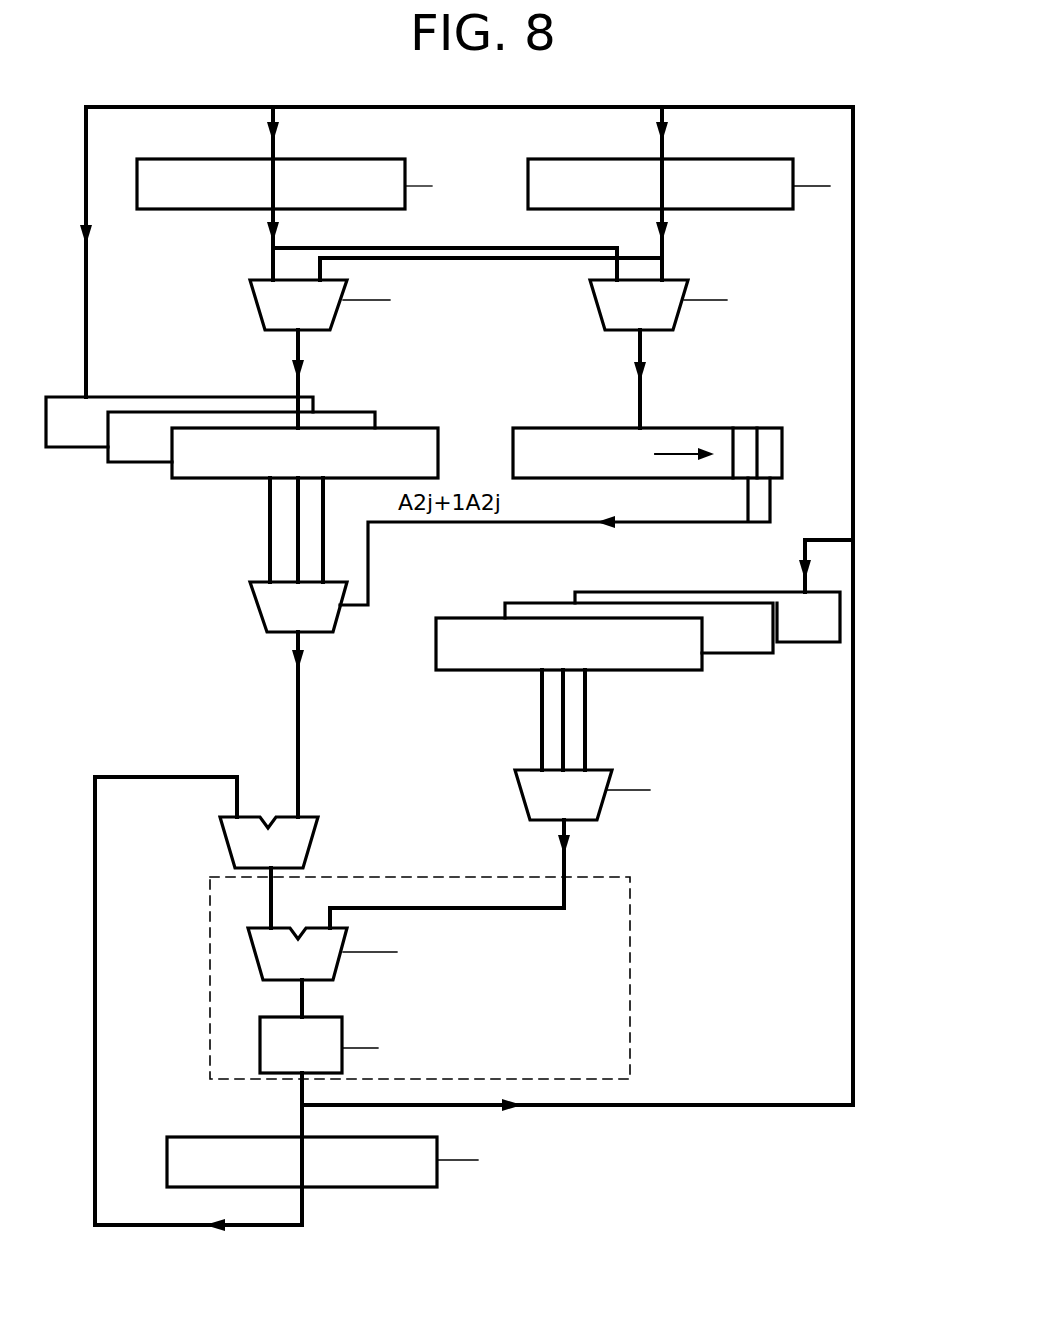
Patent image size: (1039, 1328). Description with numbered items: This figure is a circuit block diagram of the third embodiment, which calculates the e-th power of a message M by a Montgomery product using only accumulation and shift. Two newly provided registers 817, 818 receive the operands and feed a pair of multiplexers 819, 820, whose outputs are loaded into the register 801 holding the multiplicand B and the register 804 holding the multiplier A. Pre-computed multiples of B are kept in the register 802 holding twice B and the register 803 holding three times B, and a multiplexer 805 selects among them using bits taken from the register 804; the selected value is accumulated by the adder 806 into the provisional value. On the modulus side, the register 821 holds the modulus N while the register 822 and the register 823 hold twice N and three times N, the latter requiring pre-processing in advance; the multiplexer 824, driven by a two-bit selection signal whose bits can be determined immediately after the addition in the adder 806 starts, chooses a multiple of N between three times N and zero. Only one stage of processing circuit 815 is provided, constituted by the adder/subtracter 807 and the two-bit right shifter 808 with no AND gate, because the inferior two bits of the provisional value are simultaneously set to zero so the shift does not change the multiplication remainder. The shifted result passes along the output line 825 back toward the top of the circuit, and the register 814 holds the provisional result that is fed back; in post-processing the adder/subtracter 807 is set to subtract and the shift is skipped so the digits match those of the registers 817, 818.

The B register 801 is at (212, 479).
The 2B register 802 is at (351, 412).
The 3B register 803 is at (136, 396).
The A register 804 is at (555, 428).
The multiplexer MPX 805 is at (255, 605).
The adder 806 is at (228, 845).
The adder/subtracter 807 is at (256, 955).
The two-bit right shifter 808 is at (260, 1050).
The TP register 814 is at (373, 1188).
The processing circuit 815 is at (630, 948).
The T1 register 817 is at (157, 211).
The T2 register 818 is at (528, 172).
The multiplexer MPX (sel1) 819 is at (253, 302).
The multiplexer MPX (sel2) 820 is at (593, 304).
The N register 821 is at (644, 671).
The 2N register 822 is at (530, 603).
The 3N register 823 is at (669, 592).
The multiplexer 824 is at (518, 792).
The output line 825 is at (700, 1107).